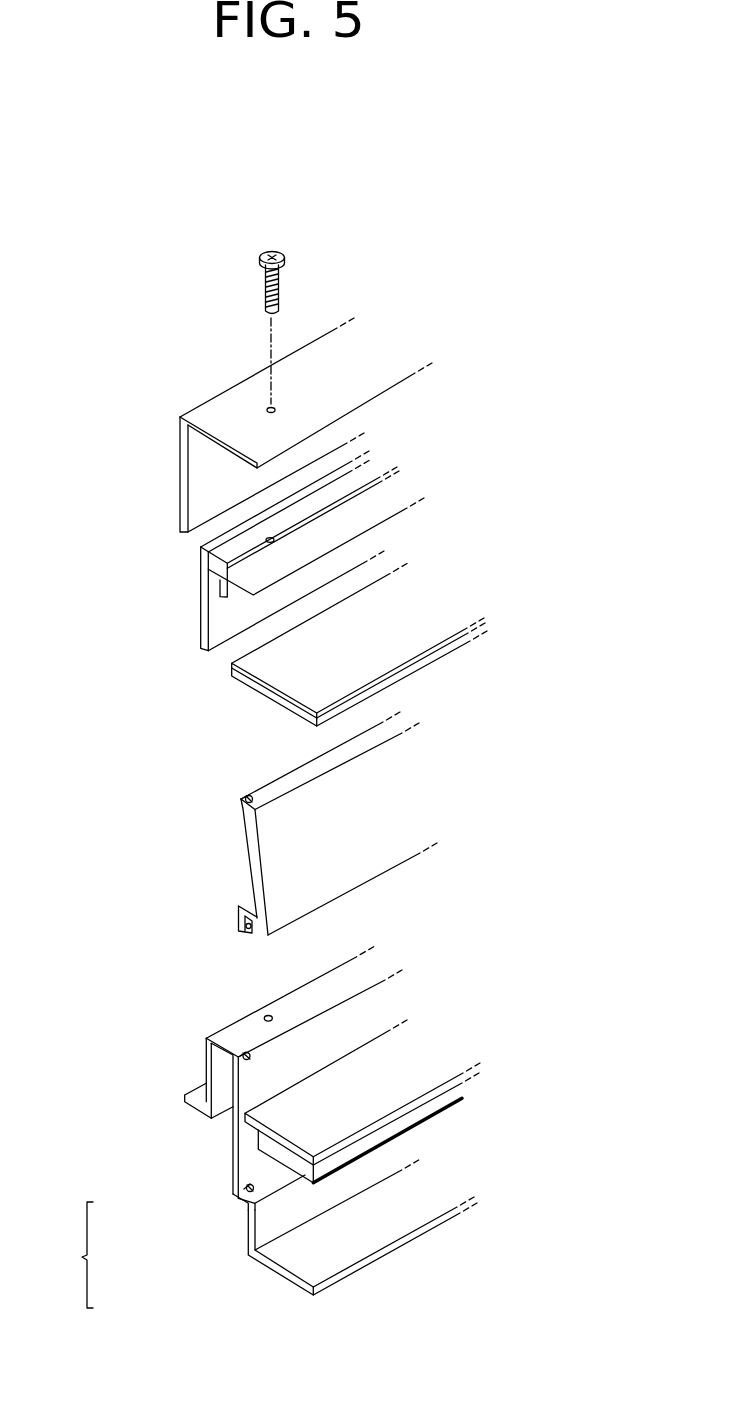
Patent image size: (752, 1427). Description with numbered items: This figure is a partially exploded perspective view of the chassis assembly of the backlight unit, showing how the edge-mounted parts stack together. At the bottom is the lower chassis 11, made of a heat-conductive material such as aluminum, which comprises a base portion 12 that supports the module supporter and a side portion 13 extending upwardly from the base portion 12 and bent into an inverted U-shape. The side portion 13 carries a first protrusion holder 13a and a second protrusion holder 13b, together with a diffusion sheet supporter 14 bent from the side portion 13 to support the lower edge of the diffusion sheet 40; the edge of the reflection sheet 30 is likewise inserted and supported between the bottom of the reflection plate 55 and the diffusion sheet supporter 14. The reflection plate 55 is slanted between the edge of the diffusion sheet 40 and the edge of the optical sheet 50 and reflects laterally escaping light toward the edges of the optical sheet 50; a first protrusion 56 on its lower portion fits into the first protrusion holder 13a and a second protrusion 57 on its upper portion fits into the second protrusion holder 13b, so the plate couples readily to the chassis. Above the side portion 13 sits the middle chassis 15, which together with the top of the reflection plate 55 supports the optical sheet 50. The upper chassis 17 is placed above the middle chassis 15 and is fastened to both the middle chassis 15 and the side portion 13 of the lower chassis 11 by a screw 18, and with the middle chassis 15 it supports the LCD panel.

The lower chassis 11 is at (76, 1266).
The base portion 12 is at (277, 1281).
The side portion 13 is at (246, 1084).
The first protrusion holder 13a is at (251, 1187).
The second protrusion holder 13b is at (213, 1053).
The diffusion sheet supporter 14 is at (247, 1203).
The middle chassis 15 is at (200, 618).
The upper chassis 17 is at (179, 479).
The screw 18 is at (263, 288).
The reflection sheet 30 is at (417, 1126).
The diffusion sheet 40 is at (469, 1090).
The optical sheet 50 is at (231, 677).
The reflection plate 55 is at (269, 845).
The first protrusion 56 is at (243, 932).
The second protrusion 57 is at (243, 797).